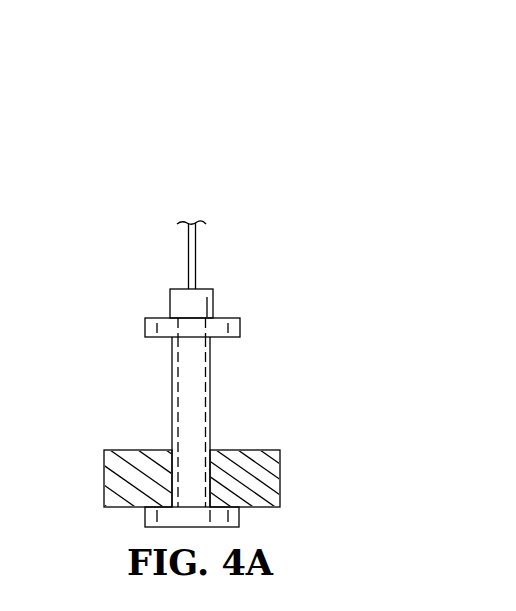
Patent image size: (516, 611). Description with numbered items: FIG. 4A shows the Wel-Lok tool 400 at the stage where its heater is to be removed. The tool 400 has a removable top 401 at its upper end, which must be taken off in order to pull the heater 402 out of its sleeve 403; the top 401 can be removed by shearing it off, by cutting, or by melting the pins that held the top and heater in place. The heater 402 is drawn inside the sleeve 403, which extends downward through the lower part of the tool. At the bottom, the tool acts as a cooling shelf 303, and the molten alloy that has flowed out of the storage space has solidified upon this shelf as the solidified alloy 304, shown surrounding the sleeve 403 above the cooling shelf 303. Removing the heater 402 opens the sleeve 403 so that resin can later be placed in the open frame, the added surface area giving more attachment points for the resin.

The Wel-Lok tool 400 is at (126, 199).
The top 401 is at (150, 298).
The heater 402 is at (176, 413).
The sleeve 403 is at (212, 385).
The solidified alloy 304 is at (104, 480).
The cooling shelf 303 is at (145, 515).